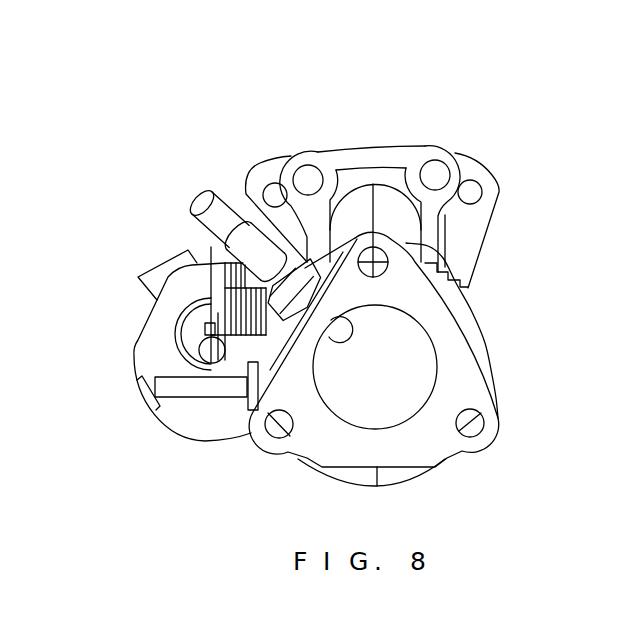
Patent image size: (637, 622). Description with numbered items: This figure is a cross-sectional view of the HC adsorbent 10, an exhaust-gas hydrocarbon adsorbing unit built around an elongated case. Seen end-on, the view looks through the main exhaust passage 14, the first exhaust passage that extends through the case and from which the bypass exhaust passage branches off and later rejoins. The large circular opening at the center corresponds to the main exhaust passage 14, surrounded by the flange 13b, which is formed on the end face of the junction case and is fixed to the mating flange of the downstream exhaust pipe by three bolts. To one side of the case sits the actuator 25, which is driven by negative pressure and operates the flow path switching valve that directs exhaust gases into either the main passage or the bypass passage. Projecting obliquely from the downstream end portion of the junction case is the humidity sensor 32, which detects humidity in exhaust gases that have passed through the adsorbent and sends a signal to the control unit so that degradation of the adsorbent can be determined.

The HC adsorbent 10 is at (468, 86).
The humidity sensor 32 is at (192, 191).
The actuator 25 is at (134, 357).
The main exhaust passage 14 is at (397, 356).
The flange 13b is at (474, 345).